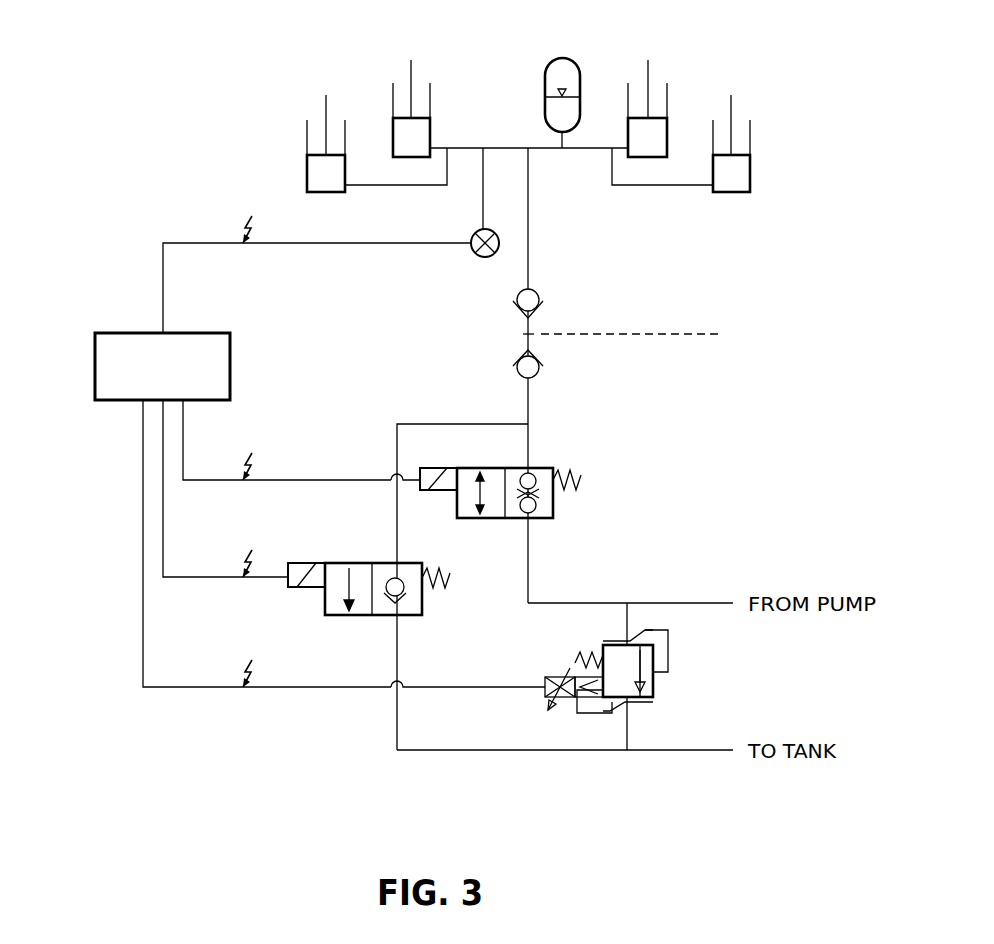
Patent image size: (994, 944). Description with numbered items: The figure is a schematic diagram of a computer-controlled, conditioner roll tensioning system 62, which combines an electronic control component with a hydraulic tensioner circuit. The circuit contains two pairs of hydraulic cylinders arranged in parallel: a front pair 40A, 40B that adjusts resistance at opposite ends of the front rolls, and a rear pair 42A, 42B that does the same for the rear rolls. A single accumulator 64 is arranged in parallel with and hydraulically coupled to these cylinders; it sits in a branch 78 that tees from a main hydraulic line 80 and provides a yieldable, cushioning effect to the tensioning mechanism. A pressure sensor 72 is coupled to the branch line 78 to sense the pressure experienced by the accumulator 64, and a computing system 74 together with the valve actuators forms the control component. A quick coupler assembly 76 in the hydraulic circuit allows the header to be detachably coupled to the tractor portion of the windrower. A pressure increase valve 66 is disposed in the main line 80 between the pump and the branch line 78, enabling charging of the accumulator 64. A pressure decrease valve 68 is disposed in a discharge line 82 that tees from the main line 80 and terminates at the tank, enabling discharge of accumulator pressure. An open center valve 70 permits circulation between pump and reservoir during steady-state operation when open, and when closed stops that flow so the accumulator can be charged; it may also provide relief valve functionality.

The front pair hydraulic cylinder 40A is at (365, 80).
The front pair hydraulic cylinder 40B is at (694, 80).
The rear pair hydraulic cylinder 42A is at (268, 165).
The rear pair hydraulic cylinder 42B is at (765, 157).
The computer-controlled conditioner roll tensioning system 62 is at (98, 198).
The accumulator 64 is at (547, 103).
The pressure increase valve 66 is at (540, 468).
The pressure decrease valve 68 is at (325, 604).
The open center valve 70 is at (653, 687).
The pressure sensor 72 is at (475, 256).
The computing system 74 is at (173, 375).
The quick coupler assembly 76 is at (578, 300).
The branch line 78 is at (515, 148).
The main hydraulic line 80 is at (528, 195).
The discharge line 82 is at (433, 424).